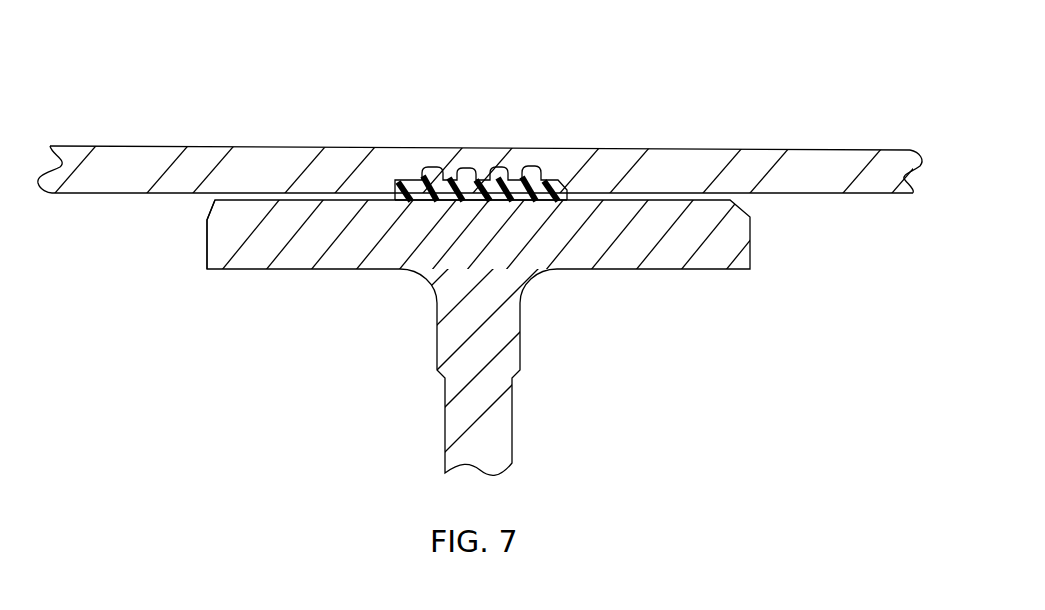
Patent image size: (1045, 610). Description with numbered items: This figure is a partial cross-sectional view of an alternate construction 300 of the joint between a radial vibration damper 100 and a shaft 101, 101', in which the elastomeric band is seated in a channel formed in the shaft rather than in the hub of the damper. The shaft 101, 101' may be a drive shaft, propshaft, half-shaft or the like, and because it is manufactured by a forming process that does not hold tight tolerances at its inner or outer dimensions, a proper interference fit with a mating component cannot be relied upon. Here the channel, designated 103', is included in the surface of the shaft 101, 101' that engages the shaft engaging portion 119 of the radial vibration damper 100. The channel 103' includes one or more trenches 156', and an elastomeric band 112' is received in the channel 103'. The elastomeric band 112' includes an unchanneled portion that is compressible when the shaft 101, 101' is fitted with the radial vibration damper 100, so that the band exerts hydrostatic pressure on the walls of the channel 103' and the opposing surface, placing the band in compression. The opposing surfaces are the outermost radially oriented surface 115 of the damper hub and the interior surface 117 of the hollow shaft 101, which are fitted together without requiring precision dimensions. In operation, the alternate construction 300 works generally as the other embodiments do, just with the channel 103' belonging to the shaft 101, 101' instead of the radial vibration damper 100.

The radial vibration damper 100 is at (478, 325).
The hollow shaft 101 is at (488, 131).
The shaft 101' is at (488, 170).
The channel 103' is at (461, 114).
The elastomeric band 112' is at (478, 114).
The outermost radially oriented surface 115 is at (322, 202).
The interior surface 117 is at (687, 195).
The shaft engaging portion 119 is at (228, 253).
The trench 156' is at (494, 260).
The alternate construction 300 is at (488, 263).